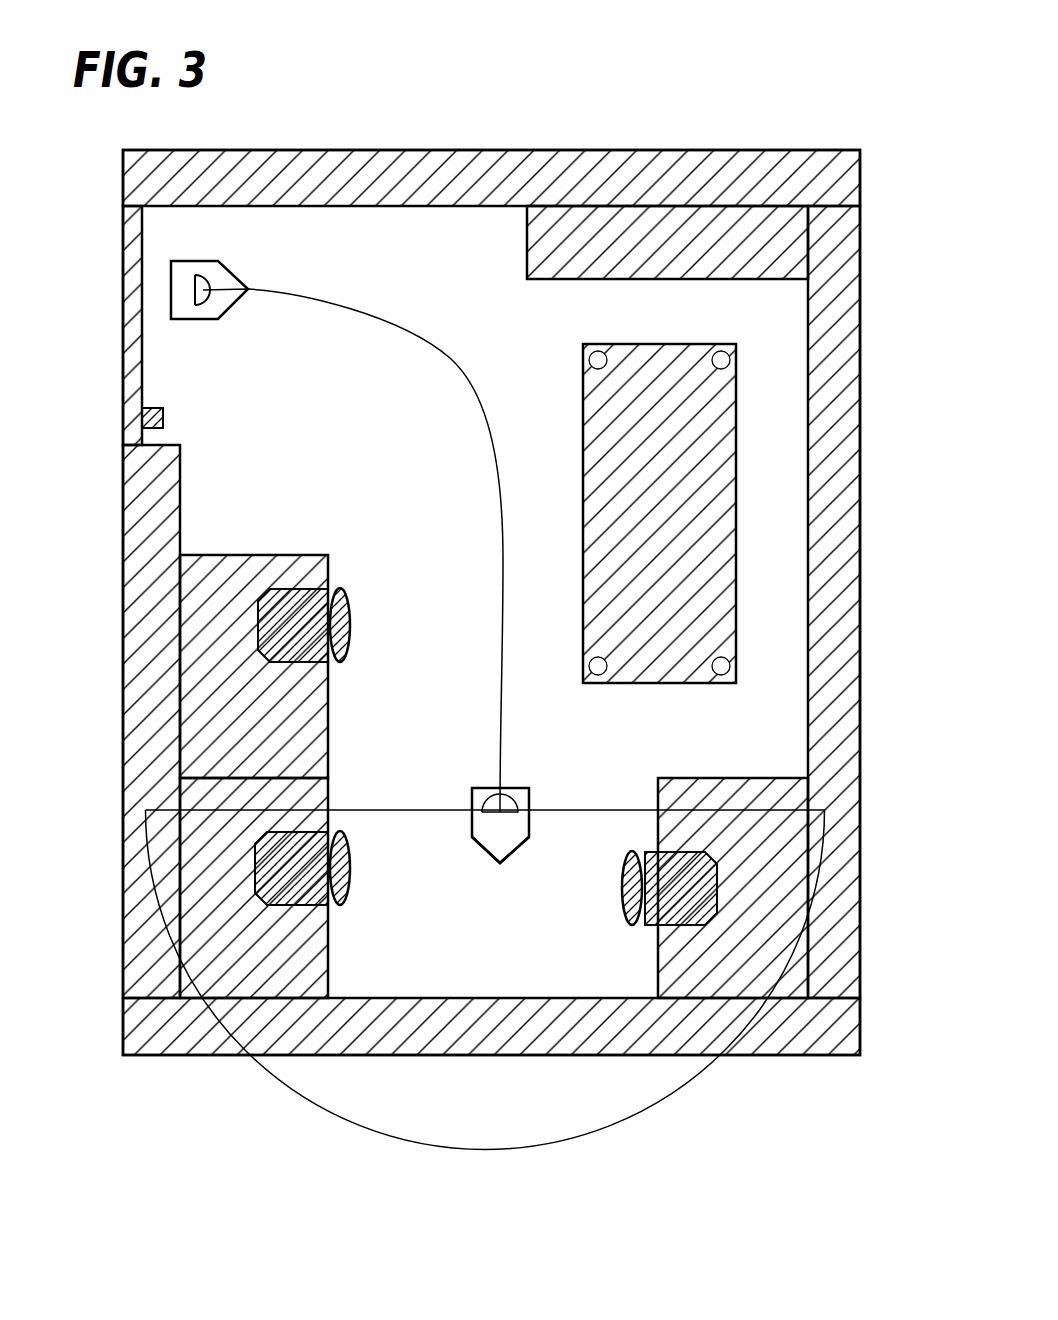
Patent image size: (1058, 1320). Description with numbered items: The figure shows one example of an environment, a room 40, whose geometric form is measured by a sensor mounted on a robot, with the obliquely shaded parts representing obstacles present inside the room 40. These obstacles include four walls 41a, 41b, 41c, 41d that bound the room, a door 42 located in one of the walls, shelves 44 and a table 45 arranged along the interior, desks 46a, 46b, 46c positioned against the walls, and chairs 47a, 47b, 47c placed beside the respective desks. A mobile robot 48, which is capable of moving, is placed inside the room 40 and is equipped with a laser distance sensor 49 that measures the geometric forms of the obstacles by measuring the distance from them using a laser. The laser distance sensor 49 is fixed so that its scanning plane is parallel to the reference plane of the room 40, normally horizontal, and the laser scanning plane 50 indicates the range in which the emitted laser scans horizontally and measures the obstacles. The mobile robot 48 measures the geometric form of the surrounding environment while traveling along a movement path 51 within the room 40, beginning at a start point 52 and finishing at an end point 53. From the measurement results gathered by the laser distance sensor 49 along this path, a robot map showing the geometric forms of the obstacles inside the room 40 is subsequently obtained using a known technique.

The room 40 is at (697, 116).
The wall 41a is at (568, 170).
The wall 41b is at (848, 710).
The wall 41c is at (783, 1048).
The wall 41d is at (148, 763).
The door 42 is at (133, 342).
The shelves 44 is at (582, 263).
The table 45 is at (725, 447).
The desk 46a is at (288, 566).
The desk 46b is at (333, 955).
The desk 46c is at (703, 784).
The chair 47a is at (385, 618).
The chair 47b is at (356, 864).
The chair 47c is at (620, 888).
The mobile robot 48 is at (515, 785).
The laser distance sensor 49 is at (500, 833).
The laser scanning plane 50 is at (345, 808).
The movement path 51 is at (373, 320).
The start point 52 is at (208, 312).
The end point 53 is at (487, 805).